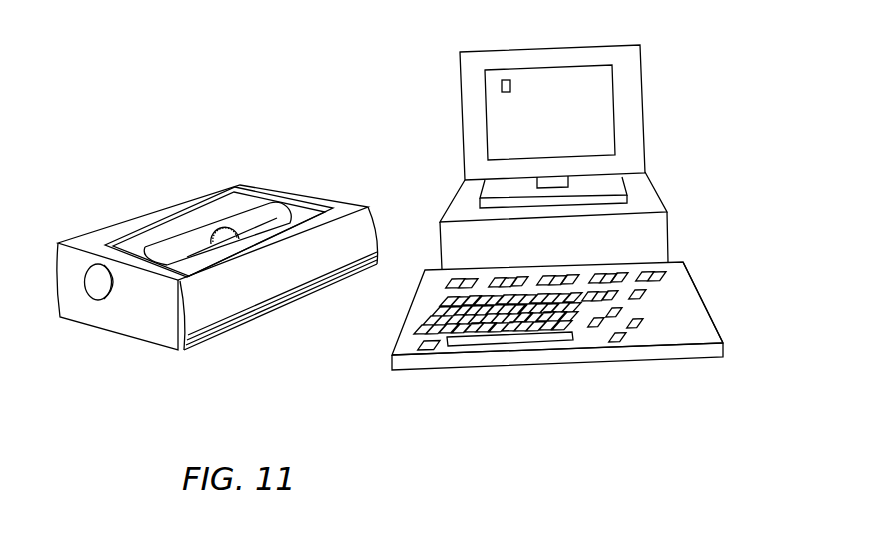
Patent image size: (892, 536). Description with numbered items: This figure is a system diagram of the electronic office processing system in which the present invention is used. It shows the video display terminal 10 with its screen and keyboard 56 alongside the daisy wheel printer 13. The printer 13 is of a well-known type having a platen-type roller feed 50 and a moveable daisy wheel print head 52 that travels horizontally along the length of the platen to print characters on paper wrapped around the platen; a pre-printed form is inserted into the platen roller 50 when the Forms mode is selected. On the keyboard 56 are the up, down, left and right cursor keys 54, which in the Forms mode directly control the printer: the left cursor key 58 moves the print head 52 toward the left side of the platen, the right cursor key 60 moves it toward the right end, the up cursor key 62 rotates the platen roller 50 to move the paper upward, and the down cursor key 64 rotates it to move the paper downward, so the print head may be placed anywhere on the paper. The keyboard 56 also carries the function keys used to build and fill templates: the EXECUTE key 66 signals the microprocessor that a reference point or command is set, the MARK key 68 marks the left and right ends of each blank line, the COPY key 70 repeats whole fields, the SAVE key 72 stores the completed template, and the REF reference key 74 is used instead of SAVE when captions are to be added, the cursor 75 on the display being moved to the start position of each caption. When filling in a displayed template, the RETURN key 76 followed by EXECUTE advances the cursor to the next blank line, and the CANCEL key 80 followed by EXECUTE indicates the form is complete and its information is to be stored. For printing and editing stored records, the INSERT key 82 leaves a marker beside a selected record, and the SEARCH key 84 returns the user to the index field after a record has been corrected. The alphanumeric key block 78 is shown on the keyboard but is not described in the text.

The video display terminal 10 is at (717, 306).
The daisy wheel printer 13 is at (143, 331).
The platen-type roller feed 50 is at (275, 210).
The daisy wheel print head 52 is at (228, 226).
The cursor keys 54 is at (607, 352).
The keyboard 56 is at (723, 338).
The left cursor key 58 is at (598, 333).
The right cursor key 60 is at (641, 324).
The up cursor key 62 is at (621, 311).
The down cursor key 64 is at (623, 340).
The EXECUTE key 66 is at (597, 290).
The MARK key 68 is at (610, 272).
The COPY key 70 is at (567, 272).
The SAVE key 72 is at (428, 352).
The REF reference key 74 is at (505, 274).
The cursor 75 is at (510, 78).
The RETURN key 76 is at (594, 328).
The alphanumeric keys 78 is at (437, 309).
The CANCEL key 80 is at (658, 270).
The INSERT key 82 is at (627, 274).
The SEARCH key 84 is at (554, 274).